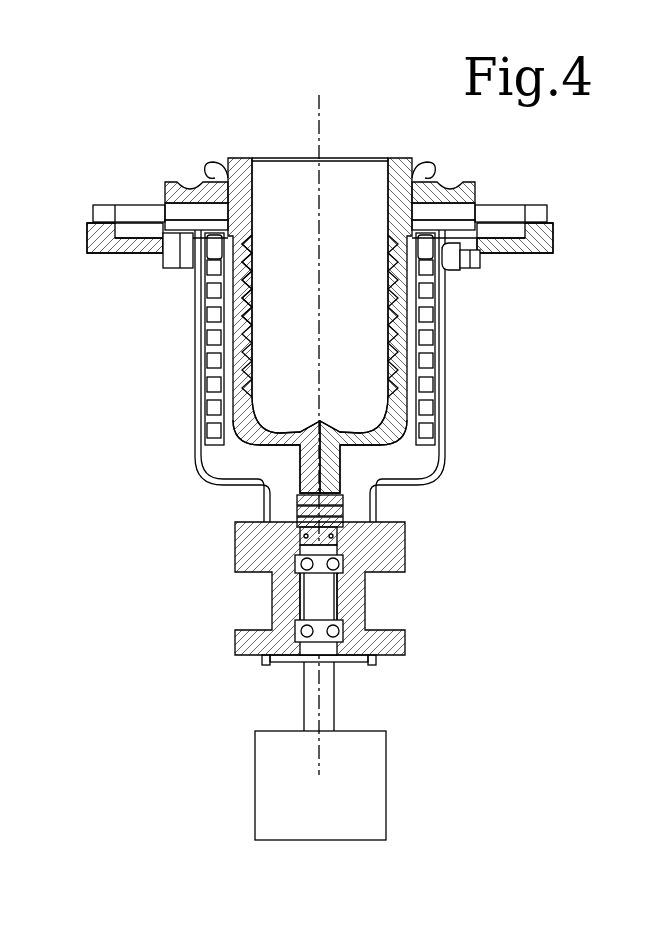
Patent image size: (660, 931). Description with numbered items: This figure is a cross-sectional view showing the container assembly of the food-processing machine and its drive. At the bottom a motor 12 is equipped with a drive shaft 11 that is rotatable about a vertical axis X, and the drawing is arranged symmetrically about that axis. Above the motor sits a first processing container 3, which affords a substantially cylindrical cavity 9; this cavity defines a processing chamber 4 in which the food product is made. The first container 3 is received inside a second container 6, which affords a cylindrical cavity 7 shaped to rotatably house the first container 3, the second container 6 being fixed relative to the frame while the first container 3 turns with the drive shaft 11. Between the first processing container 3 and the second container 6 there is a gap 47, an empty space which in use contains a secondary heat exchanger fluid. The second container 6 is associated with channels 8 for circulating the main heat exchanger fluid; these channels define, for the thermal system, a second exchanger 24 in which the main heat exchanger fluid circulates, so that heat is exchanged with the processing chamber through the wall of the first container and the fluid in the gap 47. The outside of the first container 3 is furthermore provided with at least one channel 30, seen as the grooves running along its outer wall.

The first processing container 3 is at (268, 233).
The processing chamber 4 is at (267, 158).
The second container 6 is at (216, 478).
The cavity 7 is at (382, 450).
The channels 8 is at (518, 420).
The second exchanger 24 is at (433, 290).
The cavity 9 is at (362, 307).
The drive shaft 11 is at (300, 697).
The motor 12 is at (352, 810).
The channel 30 is at (236, 313).
The gap 47 is at (253, 457).
The vertical axis X is at (320, 137).